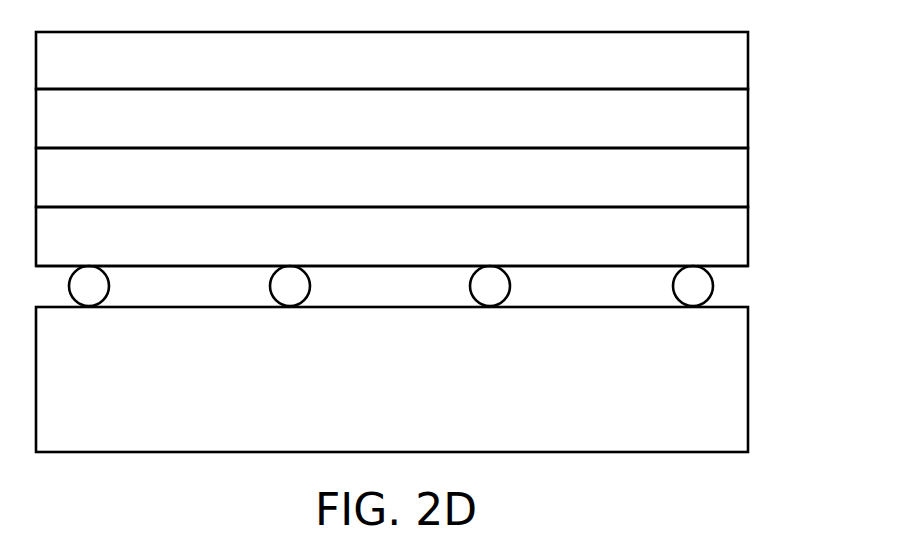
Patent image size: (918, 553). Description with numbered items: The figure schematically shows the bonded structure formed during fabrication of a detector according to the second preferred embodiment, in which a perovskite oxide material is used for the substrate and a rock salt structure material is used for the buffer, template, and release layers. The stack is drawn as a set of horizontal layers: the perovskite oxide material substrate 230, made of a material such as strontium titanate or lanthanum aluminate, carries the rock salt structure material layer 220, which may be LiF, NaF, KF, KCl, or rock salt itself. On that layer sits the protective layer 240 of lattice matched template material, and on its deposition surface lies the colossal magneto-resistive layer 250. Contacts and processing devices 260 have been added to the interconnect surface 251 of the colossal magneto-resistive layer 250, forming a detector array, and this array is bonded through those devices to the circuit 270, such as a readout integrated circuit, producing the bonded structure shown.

The perovskite oxide material substrate 230 is at (730, 59).
The rock salt structure material layer 220 is at (730, 117).
The protective layer 240 is at (730, 174).
The colossal magneto-resistive layer 250 is at (730, 231).
The interconnect surface 251 is at (737, 268).
The contacts and processing devices 260 is at (714, 284).
The circuit 270 is at (720, 384).